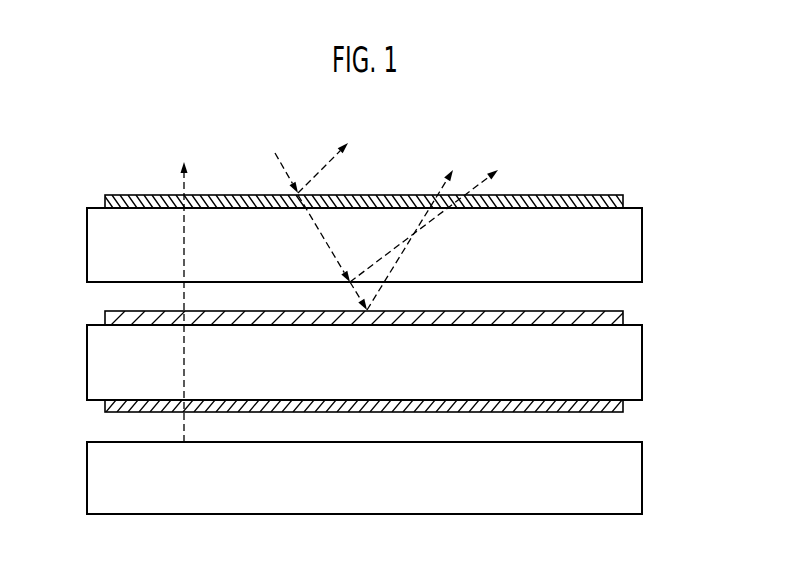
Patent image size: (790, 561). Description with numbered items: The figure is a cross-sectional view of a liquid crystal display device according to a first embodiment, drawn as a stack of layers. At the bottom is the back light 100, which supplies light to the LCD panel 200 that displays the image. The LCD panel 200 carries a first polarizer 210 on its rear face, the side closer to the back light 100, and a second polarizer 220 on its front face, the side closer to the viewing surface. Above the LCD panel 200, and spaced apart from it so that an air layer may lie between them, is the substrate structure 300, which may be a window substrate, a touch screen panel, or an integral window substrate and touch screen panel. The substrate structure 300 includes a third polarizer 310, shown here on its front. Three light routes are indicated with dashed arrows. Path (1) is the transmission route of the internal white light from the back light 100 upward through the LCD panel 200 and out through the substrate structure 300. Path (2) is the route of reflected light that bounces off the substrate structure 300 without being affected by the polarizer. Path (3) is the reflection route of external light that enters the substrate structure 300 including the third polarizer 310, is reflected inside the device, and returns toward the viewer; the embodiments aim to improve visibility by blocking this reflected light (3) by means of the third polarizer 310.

The back light 100 is at (642, 478).
The LCD panel 200 is at (642, 370).
The first polarizer 210 is at (622, 406).
The second polarizer 220 is at (623, 313).
The substrate structure 300 is at (642, 246).
The third polarizer 310 is at (623, 198).
The path 1 is at (184, 288).
The path 2 is at (321, 214).
The path 3 is at (503, 154).